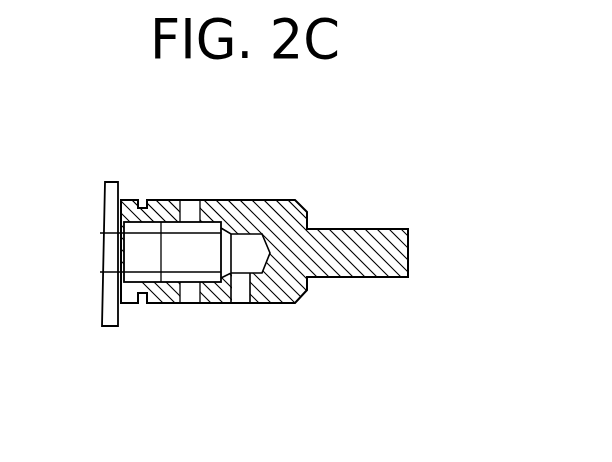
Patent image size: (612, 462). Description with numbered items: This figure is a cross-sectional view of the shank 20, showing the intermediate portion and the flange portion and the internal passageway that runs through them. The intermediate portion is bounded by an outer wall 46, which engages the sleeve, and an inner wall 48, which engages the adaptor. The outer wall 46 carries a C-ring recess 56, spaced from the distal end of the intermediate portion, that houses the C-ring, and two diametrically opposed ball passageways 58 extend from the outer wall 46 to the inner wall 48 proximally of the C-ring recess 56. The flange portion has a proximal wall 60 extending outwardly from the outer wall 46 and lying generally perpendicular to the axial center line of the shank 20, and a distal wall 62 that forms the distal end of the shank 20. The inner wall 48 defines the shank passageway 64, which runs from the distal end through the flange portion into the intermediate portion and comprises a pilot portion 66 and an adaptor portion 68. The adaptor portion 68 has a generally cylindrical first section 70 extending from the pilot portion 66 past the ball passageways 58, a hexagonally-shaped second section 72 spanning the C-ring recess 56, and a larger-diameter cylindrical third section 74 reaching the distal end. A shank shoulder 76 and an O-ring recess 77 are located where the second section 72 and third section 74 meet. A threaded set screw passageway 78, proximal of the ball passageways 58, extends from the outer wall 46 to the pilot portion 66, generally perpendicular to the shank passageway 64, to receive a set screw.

The shank 20 is at (343, 210).
The outer wall 46 is at (240, 200).
The inner wall 48 is at (163, 201).
The C-ring recess 56 is at (142, 308).
The ball passageways 58 is at (192, 200).
The proximal wall 60 is at (117, 181).
The distal wall 62 is at (104, 197).
The shank passageway 64 is at (167, 250).
The pilot portion 66 is at (288, 305).
The adaptor portion 68 is at (128, 305).
The first section 70 is at (208, 306).
The second section 72 is at (158, 304).
The third section 74 is at (105, 270).
The shank shoulder 76 is at (103, 214).
The O-ring recess 77 is at (100, 292).
The set screw passageway 78 is at (253, 256).